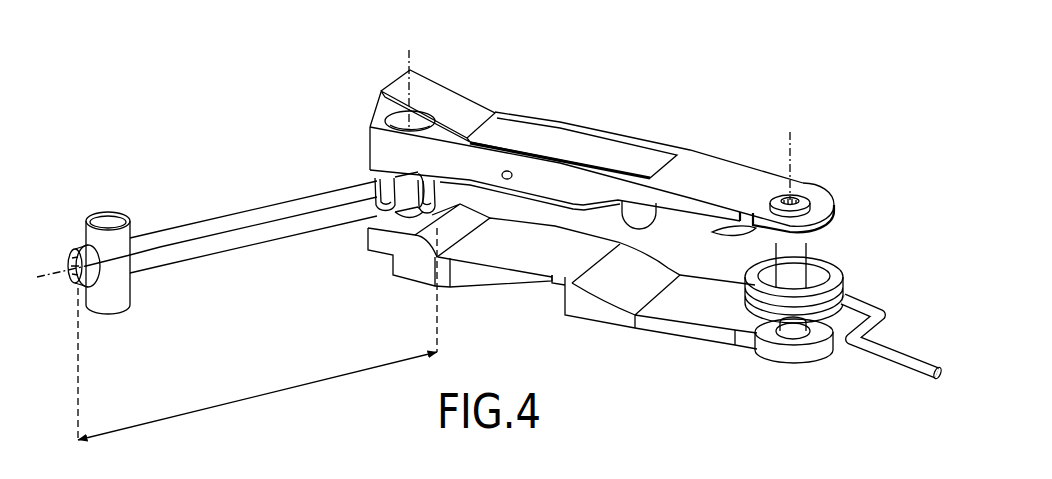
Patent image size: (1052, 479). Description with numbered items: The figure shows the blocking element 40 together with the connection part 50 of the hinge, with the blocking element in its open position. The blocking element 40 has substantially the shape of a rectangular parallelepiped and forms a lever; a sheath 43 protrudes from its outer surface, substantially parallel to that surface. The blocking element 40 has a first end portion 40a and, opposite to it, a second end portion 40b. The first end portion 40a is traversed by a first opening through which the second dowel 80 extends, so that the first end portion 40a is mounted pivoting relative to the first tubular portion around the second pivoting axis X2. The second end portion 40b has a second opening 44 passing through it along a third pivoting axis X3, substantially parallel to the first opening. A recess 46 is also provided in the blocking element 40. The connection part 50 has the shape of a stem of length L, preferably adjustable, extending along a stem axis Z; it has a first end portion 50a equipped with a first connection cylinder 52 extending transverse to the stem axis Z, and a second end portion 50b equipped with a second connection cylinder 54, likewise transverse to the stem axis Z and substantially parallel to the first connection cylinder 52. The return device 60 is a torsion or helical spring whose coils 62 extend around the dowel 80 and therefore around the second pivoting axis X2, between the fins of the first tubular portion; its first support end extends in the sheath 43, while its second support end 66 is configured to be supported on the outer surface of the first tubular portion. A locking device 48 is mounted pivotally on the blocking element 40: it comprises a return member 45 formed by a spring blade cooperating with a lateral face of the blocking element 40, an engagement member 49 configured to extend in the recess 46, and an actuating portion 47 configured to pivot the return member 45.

The blocking element 40 is at (652, 102).
The first end portion 40a is at (830, 200).
The second end portion 40b is at (370, 129).
The sheath 43 is at (742, 240).
The second opening 44 is at (397, 122).
The return member 45 is at (568, 145).
The recess 46 is at (540, 238).
The actuating portion 47 is at (457, 92).
The locking device 48 is at (542, 116).
The engagement member 49 is at (648, 219).
The connection part 50 is at (241, 210).
The first end portion 50a is at (375, 220).
The second end portion 50b is at (143, 275).
The first connection cylinder 52 is at (373, 177).
The second connection cylinder 54 is at (113, 218).
The return device 60 is at (867, 283).
The coils 62 is at (762, 318).
The second support end 66 is at (897, 362).
The second dowel 80 is at (800, 252).
The length L is at (257, 334).
The stem axis Z is at (67, 266).
The second pivoting axis X2 is at (790, 154).
The third pivoting axis X3 is at (410, 79).